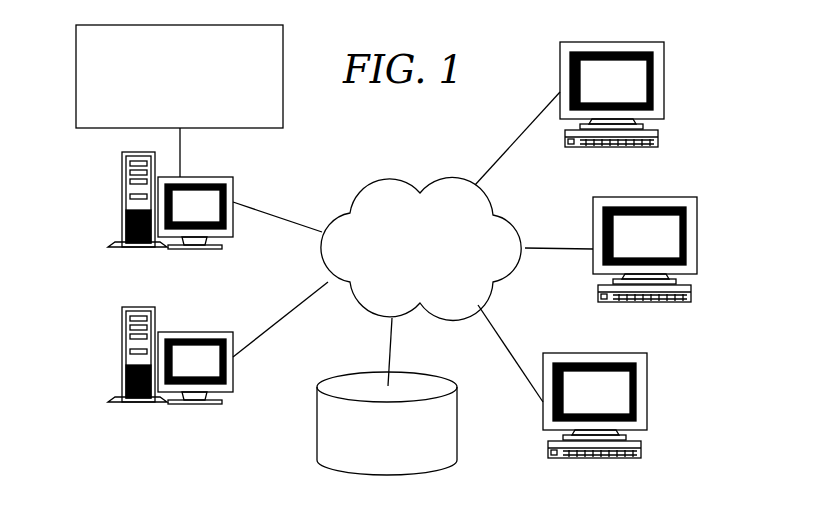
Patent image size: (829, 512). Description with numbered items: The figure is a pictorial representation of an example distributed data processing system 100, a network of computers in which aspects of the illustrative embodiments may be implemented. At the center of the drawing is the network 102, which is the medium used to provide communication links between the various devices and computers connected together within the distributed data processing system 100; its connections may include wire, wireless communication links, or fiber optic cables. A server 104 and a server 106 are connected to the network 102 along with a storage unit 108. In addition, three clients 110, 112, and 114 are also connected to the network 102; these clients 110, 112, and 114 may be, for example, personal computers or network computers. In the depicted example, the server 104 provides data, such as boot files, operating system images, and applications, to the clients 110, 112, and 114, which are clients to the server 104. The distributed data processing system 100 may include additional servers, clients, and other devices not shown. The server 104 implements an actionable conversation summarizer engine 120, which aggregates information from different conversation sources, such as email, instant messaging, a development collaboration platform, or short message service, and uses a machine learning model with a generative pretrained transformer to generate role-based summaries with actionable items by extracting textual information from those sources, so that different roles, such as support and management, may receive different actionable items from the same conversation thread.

The distributed data processing system 100 is at (287, 417).
The network 102 is at (388, 180).
The server 104 is at (190, 175).
The server 106 is at (190, 330).
The storage unit 108 is at (458, 410).
The client 110 is at (664, 87).
The client 112 is at (698, 240).
The client 114 is at (647, 398).
The actionable conversation summarizer engine 120 is at (76, 47).